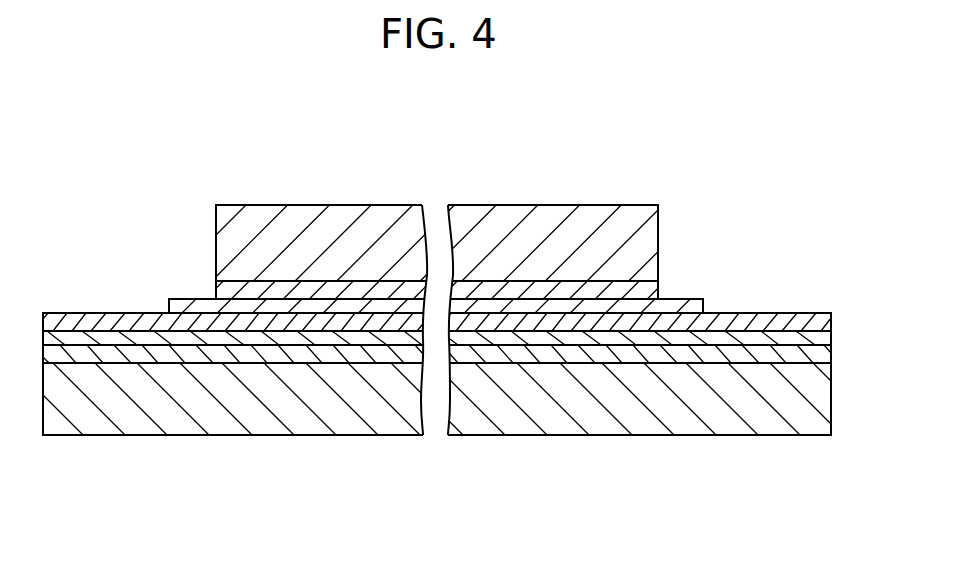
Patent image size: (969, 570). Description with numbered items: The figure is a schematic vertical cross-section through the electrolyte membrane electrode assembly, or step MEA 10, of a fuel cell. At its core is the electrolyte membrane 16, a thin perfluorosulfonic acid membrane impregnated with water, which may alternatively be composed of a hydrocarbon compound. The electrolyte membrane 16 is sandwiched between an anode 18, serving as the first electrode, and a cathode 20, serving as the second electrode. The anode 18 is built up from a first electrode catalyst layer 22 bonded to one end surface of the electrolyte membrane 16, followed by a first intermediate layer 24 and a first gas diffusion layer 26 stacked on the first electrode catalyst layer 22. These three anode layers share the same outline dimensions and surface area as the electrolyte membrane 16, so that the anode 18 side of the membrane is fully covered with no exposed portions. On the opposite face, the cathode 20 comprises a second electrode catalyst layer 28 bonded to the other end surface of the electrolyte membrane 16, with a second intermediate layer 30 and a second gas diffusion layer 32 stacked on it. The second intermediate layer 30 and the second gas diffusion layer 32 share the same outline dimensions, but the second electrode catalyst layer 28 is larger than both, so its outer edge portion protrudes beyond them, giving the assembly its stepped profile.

The electrolyte membrane electrode assembly 10 is at (552, 96).
The electrolyte membrane 16 is at (798, 318).
The anode 18 is at (795, 484).
The cathode 20 is at (738, 290).
The first electrode catalyst layer 22 is at (783, 337).
The first intermediate layer 24 is at (733, 350).
The first gas diffusion layer 26 is at (678, 422).
The second electrode catalyst layer 28 is at (687, 310).
The second intermediate layer 30 is at (633, 288).
The second gas diffusion layer 32 is at (642, 218).